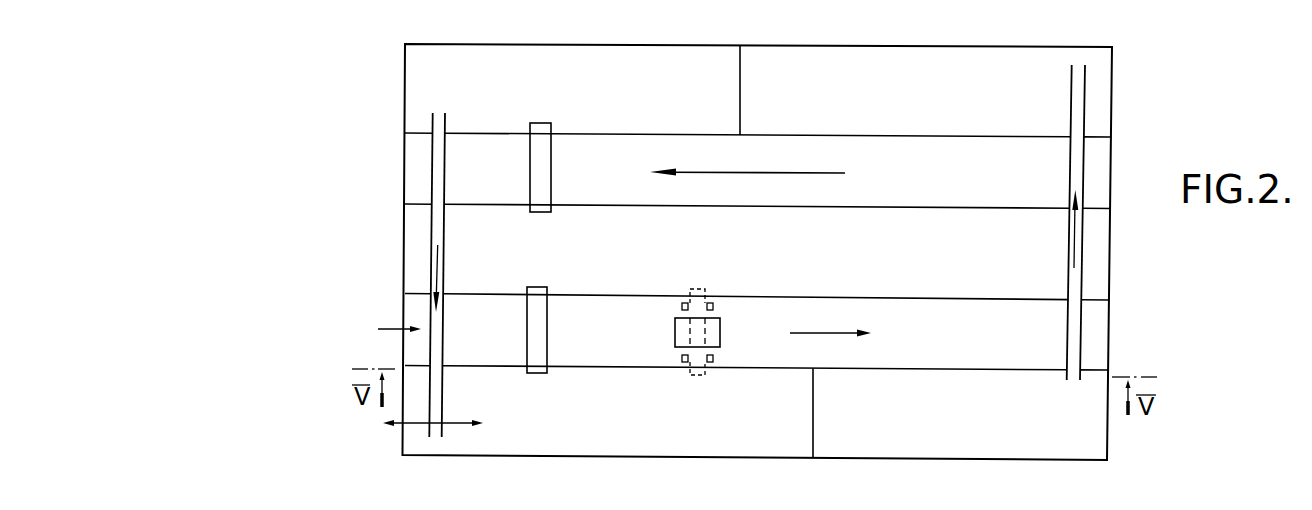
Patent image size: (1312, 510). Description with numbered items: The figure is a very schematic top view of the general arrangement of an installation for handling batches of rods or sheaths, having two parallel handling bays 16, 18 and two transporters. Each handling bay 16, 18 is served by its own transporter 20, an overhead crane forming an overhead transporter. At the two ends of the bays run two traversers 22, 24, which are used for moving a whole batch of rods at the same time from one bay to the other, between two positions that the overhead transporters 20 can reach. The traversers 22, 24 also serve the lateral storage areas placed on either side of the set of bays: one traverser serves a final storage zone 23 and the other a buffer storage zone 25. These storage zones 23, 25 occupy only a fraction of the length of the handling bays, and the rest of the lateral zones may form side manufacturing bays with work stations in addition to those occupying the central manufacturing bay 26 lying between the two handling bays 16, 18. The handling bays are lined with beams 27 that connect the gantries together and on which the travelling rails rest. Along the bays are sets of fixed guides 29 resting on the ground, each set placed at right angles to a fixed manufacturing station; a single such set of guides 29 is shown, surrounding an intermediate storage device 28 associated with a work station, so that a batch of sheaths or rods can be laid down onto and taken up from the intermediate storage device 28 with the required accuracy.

The handling bay 16 is at (947, 346).
The handling bay 18 is at (918, 182).
The transporter 20 is at (543, 188).
The traverser 22 is at (443, 393).
The lower chamber 23 is at (588, 436).
The traverser 24 is at (1082, 267).
The buffer storage zone 25 is at (980, 110).
The central manufacturing bay 26 is at (928, 266).
The beams 27 is at (745, 367).
The intermediate storage device 28 is at (674, 332).
The sets of fixed guides 29 is at (689, 302).